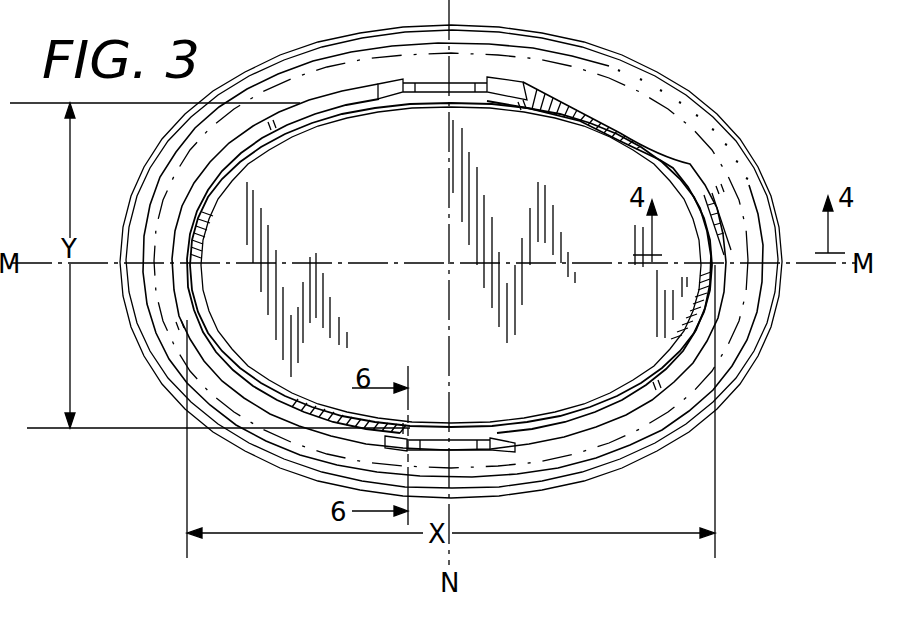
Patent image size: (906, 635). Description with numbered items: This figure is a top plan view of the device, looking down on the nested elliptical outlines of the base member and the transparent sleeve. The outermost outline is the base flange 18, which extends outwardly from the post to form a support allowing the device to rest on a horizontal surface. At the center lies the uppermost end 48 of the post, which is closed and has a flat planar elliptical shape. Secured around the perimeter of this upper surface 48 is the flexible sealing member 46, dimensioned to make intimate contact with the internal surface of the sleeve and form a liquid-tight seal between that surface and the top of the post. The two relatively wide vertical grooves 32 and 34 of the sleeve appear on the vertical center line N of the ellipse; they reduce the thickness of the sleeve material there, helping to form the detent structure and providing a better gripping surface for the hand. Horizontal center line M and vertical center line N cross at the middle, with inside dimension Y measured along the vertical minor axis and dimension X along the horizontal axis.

The base flange 18 is at (741, 388).
The vertical groove 32 is at (500, 452).
The vertical groove 34 is at (442, 80).
The flexible sealing member 46 is at (657, 167).
The uppermost end 48 is at (412, 245).